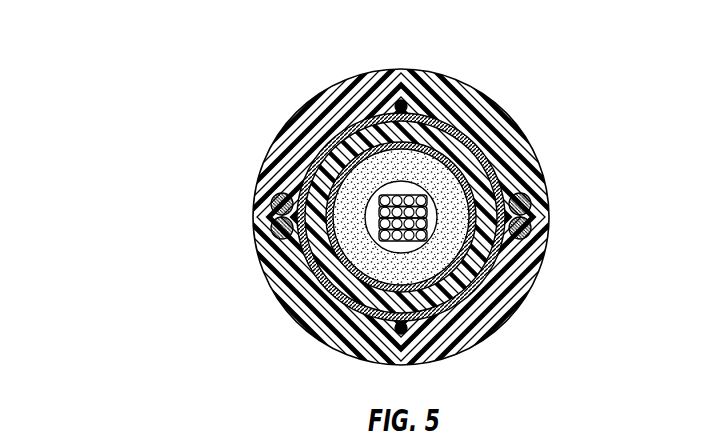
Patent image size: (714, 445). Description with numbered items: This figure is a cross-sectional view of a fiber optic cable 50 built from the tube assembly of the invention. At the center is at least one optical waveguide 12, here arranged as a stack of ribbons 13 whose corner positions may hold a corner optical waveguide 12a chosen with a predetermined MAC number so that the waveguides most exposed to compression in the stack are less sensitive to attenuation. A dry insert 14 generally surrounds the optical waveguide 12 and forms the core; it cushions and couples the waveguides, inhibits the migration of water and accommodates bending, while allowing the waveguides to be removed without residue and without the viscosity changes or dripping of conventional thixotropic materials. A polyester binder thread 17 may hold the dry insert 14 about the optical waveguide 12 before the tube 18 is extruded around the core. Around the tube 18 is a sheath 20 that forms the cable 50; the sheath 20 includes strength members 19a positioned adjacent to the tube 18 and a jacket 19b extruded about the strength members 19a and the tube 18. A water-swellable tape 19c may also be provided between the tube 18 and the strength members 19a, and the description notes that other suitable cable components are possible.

The cable 50 is at (330, 85).
The sheath 20 is at (292, 132).
The polyester binder thread 17 is at (402, 101).
The tube 18 is at (455, 136).
The stack of ribbons 13 is at (497, 127).
The dry insert 14 is at (418, 188).
The strength members 19a is at (270, 181).
The jacket 19b is at (284, 275).
The water-swellable tape 19c is at (468, 285).
The corner optical waveguide 12a is at (380, 236).
The optical waveguide 12 is at (472, 323).